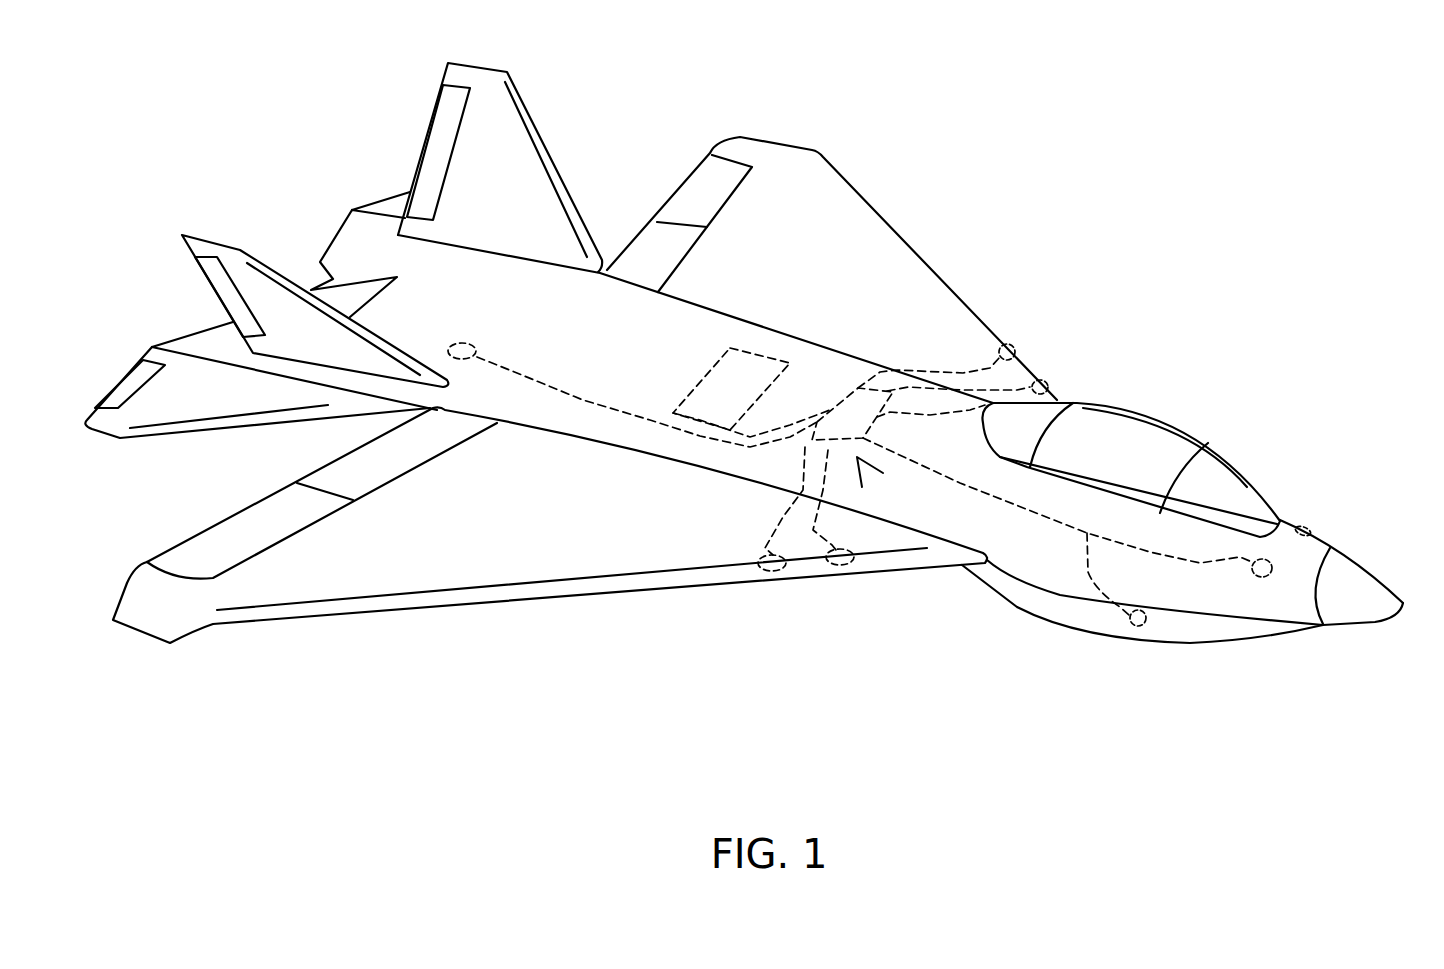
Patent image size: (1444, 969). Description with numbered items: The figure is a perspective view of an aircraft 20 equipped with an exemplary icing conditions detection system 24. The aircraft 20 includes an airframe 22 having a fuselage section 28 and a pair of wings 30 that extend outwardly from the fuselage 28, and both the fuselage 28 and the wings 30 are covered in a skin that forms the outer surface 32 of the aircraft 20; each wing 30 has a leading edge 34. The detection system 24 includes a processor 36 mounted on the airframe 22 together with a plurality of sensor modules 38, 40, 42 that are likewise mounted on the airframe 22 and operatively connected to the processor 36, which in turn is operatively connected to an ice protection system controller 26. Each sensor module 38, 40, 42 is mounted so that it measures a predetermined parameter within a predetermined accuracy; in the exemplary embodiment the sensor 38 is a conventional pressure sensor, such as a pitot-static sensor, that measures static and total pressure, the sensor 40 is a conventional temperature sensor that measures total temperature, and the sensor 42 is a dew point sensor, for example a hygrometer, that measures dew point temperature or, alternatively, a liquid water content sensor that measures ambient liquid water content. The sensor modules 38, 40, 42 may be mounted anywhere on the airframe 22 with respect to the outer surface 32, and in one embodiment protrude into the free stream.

The aircraft 20 is at (1097, 108).
The airframe 22 is at (610, 320).
The icing conditions detection system 24 is at (857, 457).
The ice protection system controller 26 is at (703, 375).
The fuselage section 28 is at (437, 307).
The wings 30 is at (865, 235).
The outer surface 32 is at (533, 338).
The leading edge 34 is at (973, 307).
The processor 36 is at (842, 405).
The pressure sensor 38 is at (1297, 517).
The temperature sensor 40 is at (1016, 360).
The dew point sensor 42 is at (463, 360).